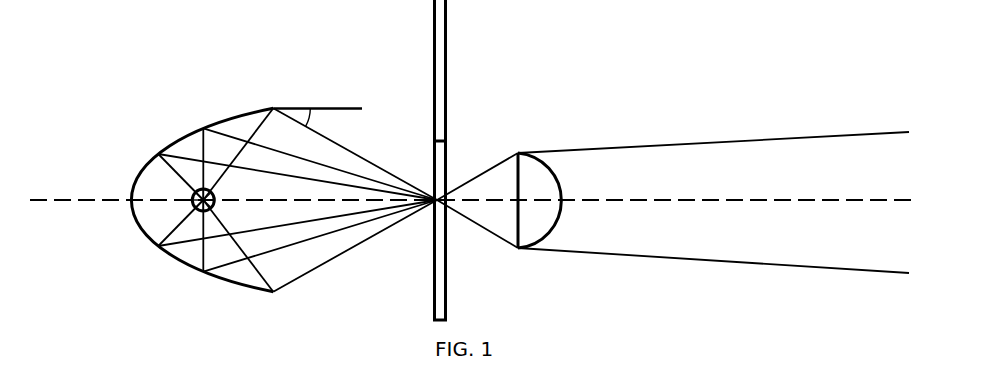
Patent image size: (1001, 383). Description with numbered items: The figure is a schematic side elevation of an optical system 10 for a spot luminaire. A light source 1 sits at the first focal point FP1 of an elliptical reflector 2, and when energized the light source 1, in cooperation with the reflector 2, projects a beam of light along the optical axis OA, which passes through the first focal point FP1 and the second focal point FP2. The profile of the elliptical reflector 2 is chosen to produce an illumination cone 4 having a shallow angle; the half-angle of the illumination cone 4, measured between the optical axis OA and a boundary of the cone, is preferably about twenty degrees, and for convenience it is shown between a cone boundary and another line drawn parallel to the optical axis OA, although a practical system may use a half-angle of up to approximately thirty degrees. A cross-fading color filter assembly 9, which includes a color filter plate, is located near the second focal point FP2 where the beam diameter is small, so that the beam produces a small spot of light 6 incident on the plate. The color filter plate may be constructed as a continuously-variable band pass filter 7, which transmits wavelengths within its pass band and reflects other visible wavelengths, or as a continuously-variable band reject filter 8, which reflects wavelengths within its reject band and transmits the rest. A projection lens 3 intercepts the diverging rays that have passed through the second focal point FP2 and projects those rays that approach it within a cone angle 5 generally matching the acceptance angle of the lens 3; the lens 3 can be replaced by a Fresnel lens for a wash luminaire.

The light source 1 is at (192, 200).
The elliptical reflector 2 is at (163, 147).
The projection lens 3 is at (551, 161).
The illumination cone 4 is at (398, 173).
The cone angle 5 is at (497, 238).
The small spot of light 6 is at (430, 207).
The continuously-variable band pass (CVBP) filter 7 is at (447, 43).
The continuously-variable band reject (CVBR) filter 8 is at (447, 300).
The cross-fading color filter assembly 9 is at (397, 49).
The optical system 10 is at (237, 59).
The first focal point FP1 is at (190, 205).
The second focal point FP2 is at (452, 187).
The optical axis OA is at (53, 198).